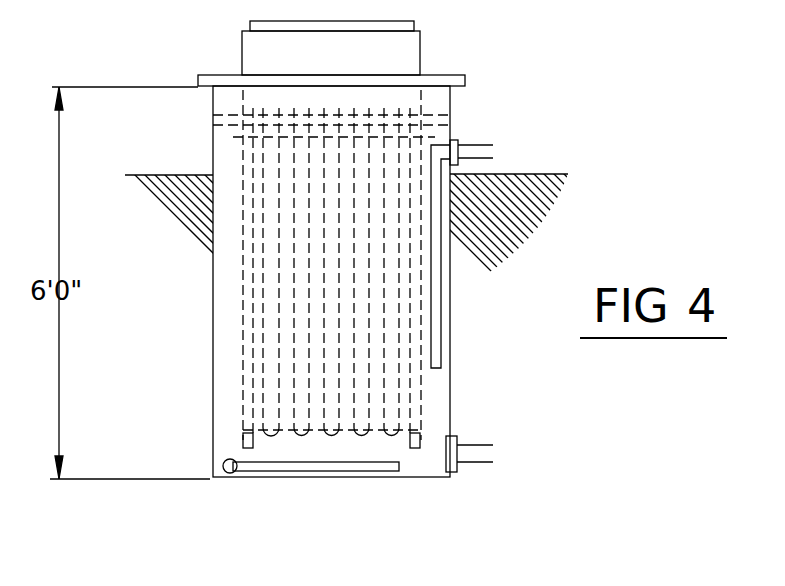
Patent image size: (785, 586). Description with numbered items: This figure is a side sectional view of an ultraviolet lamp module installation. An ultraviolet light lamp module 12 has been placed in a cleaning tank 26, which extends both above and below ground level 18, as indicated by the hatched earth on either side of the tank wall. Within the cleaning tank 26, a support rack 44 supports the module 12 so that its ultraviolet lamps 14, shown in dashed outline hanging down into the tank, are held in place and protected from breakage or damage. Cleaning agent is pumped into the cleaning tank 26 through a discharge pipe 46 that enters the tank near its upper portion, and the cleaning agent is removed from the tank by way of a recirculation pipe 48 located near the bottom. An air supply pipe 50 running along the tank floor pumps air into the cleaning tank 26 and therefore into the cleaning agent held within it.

The ultraviolet light lamp module 12 is at (242, 44).
The ultraviolet lamps 14 is at (302, 352).
The ground level 18 is at (137, 175).
The cleaning tank 26 is at (212, 428).
The support rack 44 is at (213, 135).
The discharge pipe 46 is at (450, 312).
The recirculation pipe 48 is at (480, 444).
The air supply pipe 50 is at (270, 470).